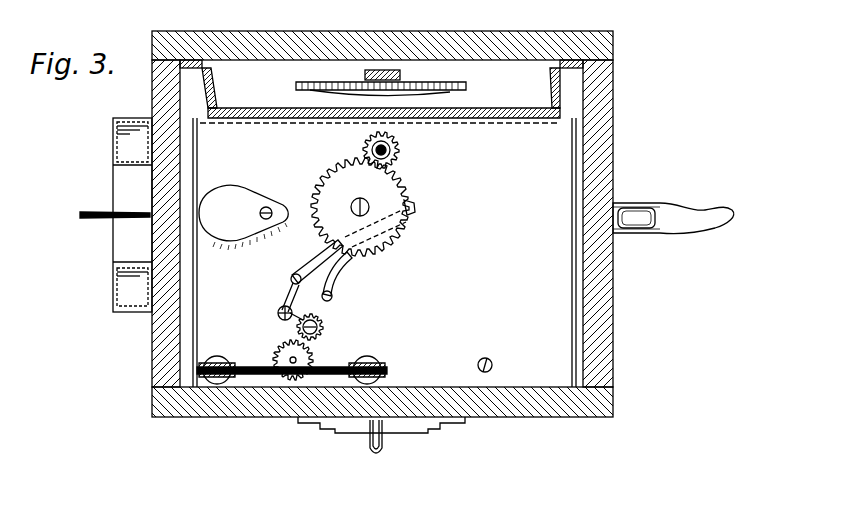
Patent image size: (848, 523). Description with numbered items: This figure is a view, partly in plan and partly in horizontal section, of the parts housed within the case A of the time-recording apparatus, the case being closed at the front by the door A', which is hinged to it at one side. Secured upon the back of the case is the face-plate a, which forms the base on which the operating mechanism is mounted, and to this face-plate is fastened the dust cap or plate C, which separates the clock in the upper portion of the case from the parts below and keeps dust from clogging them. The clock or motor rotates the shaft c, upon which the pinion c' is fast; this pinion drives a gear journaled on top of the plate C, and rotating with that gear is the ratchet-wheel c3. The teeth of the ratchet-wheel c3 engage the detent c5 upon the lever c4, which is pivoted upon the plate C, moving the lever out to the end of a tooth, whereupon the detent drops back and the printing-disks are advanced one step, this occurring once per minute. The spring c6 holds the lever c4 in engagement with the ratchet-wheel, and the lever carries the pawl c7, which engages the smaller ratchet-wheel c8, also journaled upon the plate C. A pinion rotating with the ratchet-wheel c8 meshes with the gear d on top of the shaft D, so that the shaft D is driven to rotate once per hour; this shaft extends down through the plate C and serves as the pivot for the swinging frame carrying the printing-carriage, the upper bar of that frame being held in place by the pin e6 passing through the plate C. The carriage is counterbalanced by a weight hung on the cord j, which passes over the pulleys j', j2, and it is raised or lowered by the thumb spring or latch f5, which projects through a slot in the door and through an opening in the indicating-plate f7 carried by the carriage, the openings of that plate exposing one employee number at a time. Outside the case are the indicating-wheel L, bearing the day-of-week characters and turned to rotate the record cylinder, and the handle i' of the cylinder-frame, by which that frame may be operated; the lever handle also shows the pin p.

The case A is at (405, 209).
The door A' is at (382, 427).
The face-plate a is at (565, 95).
The indicating-wheel L is at (118, 243).
The dust cap or plate C is at (378, 216).
The shaft c is at (405, 150).
The pinion c' is at (413, 162).
The ratchet-wheel c3 is at (390, 187).
The lever c4 is at (318, 268).
The detent c5 is at (413, 208).
The spring c6 is at (338, 275).
The pawl c7 is at (278, 313).
The smaller ratchet-wheel c8 is at (323, 328).
The gear d is at (314, 355).
The shaft D is at (323, 393).
The cord j is at (292, 416).
The pulley j' is at (214, 410).
The pulley j2 is at (362, 385).
The indicating-plate f7 is at (412, 427).
The thumb spring or latch f5 is at (376, 458).
The pin e6 is at (494, 363).
The handle i' is at (682, 218).
The pin p is at (638, 216).